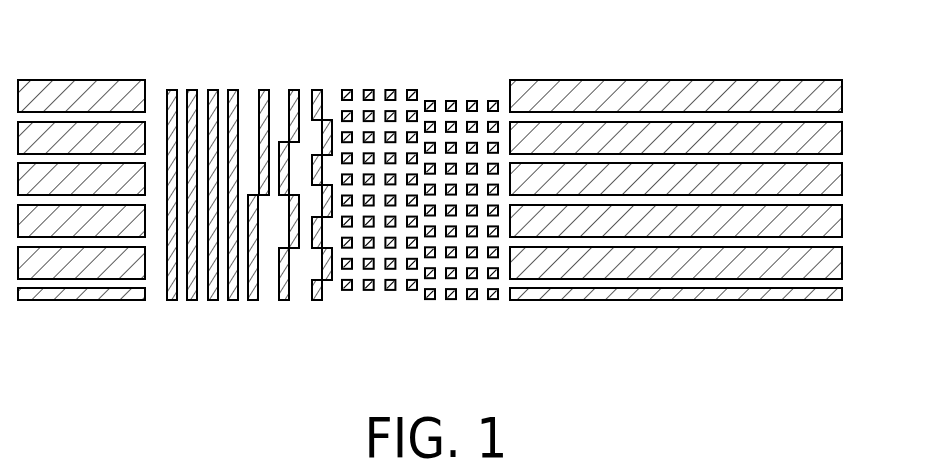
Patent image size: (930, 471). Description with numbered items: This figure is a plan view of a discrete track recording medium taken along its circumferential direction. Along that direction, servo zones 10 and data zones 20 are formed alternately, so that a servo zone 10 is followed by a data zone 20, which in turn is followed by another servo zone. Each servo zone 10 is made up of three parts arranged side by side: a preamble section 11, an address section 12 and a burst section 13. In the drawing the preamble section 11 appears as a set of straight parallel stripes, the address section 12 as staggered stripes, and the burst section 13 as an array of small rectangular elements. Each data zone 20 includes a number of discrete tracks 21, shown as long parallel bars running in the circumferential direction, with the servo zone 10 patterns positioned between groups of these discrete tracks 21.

The servo zone 10 is at (162, 68).
The preamble section 11 is at (162, 309).
The address section 12 is at (330, 309).
The burst section 13 is at (340, 309).
The data zone 20 is at (842, 68).
The discrete track 21 is at (820, 101).